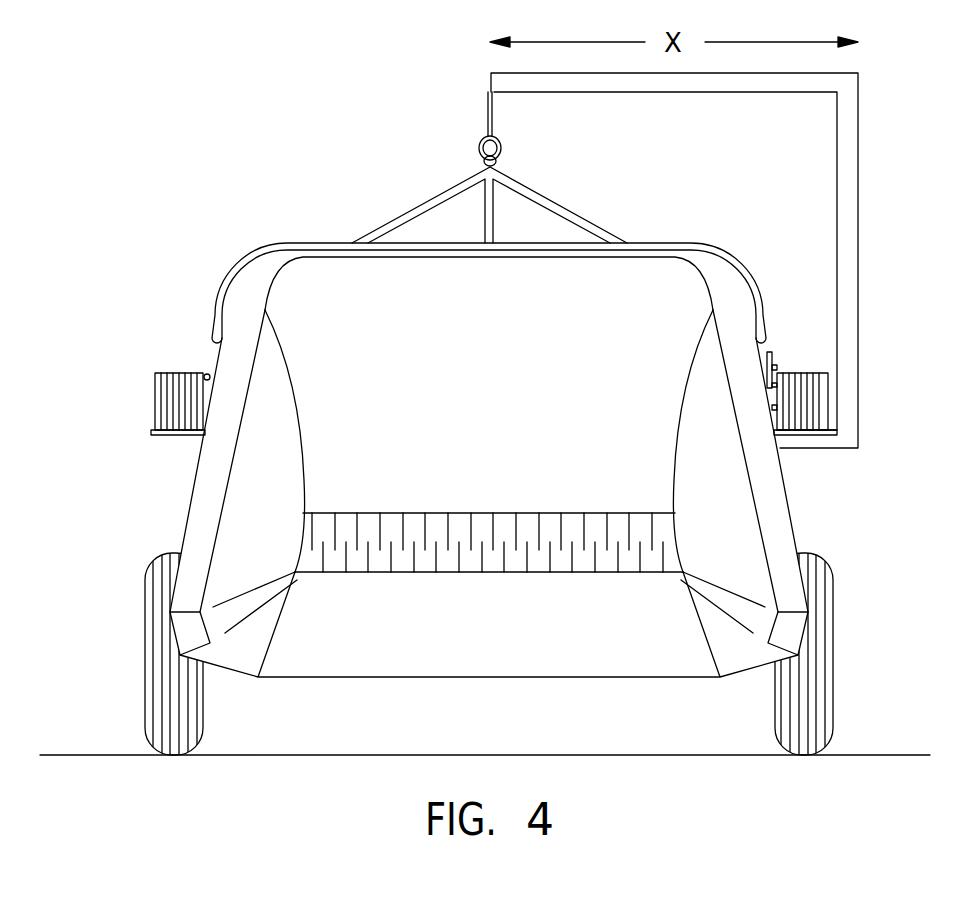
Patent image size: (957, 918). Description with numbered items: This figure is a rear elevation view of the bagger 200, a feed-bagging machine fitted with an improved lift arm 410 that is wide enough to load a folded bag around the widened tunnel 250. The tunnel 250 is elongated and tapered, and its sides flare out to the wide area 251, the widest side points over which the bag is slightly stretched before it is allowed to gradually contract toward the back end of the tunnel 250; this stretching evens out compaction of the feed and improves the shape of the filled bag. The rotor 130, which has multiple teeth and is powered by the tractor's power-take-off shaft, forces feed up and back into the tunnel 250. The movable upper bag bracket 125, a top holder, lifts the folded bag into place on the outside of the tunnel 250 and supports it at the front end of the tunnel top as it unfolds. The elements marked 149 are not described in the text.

The movable upper bag bracket 125 is at (556, 200).
The rotor 130 is at (462, 553).
The lights 149 is at (175, 373).
The bagger 200 is at (830, 499).
The tunnel 250 is at (191, 505).
The wide area 251 is at (170, 612).
The lift arm 410 is at (859, 170).